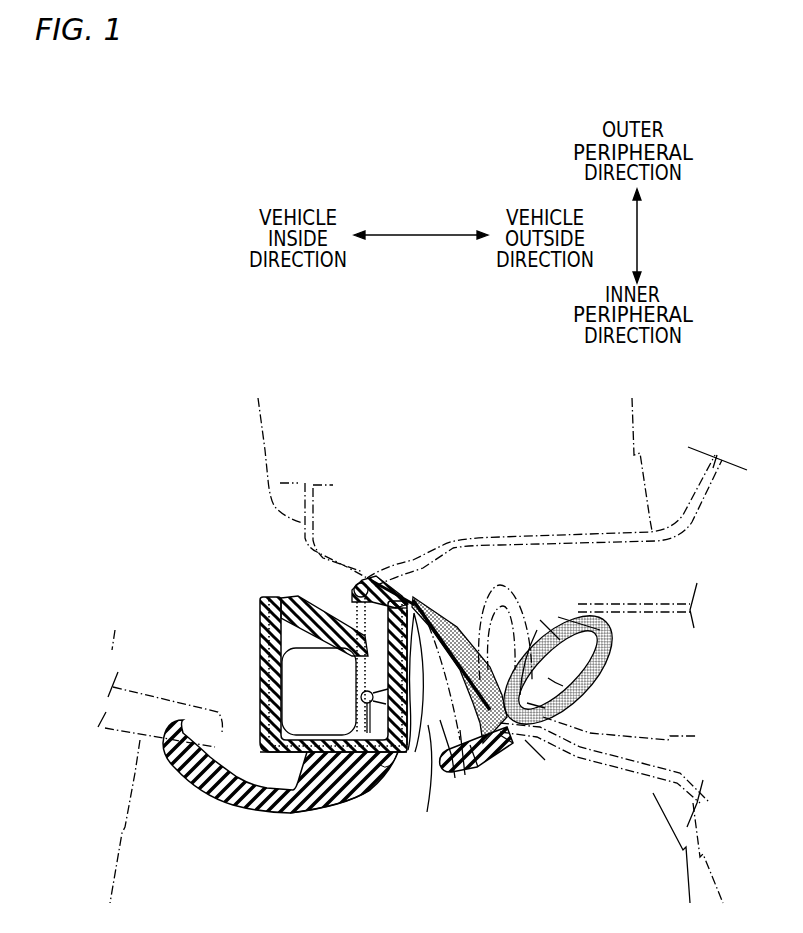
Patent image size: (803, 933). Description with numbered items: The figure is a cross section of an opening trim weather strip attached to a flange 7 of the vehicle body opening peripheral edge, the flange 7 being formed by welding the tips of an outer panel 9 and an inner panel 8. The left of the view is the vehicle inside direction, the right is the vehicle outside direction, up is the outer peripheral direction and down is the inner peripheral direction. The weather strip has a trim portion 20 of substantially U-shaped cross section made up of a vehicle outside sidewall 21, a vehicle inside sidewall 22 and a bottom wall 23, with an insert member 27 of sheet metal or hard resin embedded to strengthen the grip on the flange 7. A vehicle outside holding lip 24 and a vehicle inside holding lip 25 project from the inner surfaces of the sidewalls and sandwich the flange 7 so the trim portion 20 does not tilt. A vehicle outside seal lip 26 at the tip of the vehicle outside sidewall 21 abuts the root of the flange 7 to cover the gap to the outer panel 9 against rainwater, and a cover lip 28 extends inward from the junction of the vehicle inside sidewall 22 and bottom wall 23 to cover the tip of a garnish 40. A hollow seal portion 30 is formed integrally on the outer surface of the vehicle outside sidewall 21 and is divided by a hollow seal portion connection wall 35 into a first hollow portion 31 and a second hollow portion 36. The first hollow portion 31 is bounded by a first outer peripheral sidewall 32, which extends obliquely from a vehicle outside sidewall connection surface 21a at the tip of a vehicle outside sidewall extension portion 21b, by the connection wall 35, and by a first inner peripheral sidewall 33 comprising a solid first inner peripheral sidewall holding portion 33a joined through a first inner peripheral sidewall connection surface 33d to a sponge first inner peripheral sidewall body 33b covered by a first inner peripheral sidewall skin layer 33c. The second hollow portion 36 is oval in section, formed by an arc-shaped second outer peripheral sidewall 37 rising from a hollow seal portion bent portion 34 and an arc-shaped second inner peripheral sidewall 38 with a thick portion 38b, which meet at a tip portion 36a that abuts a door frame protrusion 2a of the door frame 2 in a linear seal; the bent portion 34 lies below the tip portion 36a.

The door frame 2 is at (711, 868).
The door frame protrusion 2a is at (633, 736).
The flange 7 is at (363, 693).
The inner panel 8 is at (276, 446).
The outer panel 9 is at (638, 450).
The trim portion 20 is at (343, 780).
The vehicle outside sidewall 21 is at (420, 755).
The vehicle outside sidewall connection surface 21a is at (412, 590).
The vehicle outside sidewall extension portion 21b is at (397, 582).
The vehicle inside sidewall 22 is at (283, 638).
The bottom wall 23 is at (307, 757).
The vehicle outside holding lip 24 is at (380, 765).
The vehicle inside holding lip 25 is at (330, 625).
The vehicle outside seal lip 26 is at (372, 582).
The insert member 27 is at (327, 767).
The cover lip 28 is at (243, 793).
The hollow seal portion 30 is at (457, 615).
The first hollow portion 31 is at (465, 775).
The first outer peripheral sidewall 32 is at (432, 608).
The first inner peripheral sidewall 33 is at (490, 765).
The first inner peripheral sidewall holding portion 33a is at (427, 812).
The first inner peripheral sidewall body 33b is at (505, 765).
The first inner peripheral sidewall skin layer 33c is at (475, 765).
The first inner peripheral sidewall connection surface 33d is at (455, 778).
The hollow seal portion bent portion 34 is at (676, 863).
The hollow seal portion connection wall 35 is at (543, 762).
The second hollow portion 36 is at (573, 645).
The tip portion 36a is at (600, 615).
The second outer peripheral sidewall 37 is at (558, 615).
The second inner peripheral sidewall 38 is at (527, 703).
The thick portion 38b is at (560, 670).
The garnish 40 is at (118, 836).